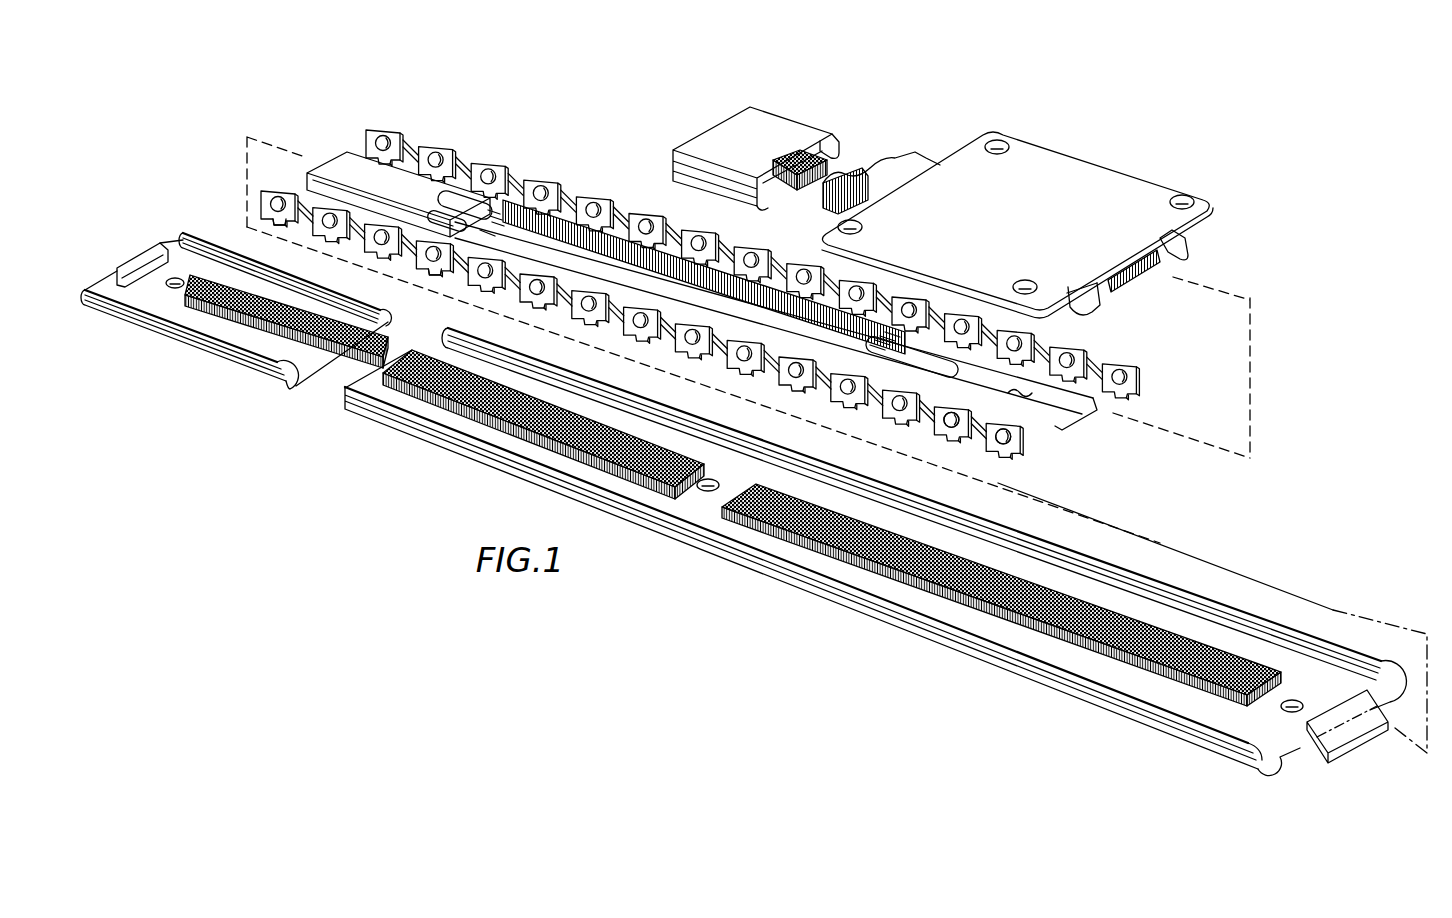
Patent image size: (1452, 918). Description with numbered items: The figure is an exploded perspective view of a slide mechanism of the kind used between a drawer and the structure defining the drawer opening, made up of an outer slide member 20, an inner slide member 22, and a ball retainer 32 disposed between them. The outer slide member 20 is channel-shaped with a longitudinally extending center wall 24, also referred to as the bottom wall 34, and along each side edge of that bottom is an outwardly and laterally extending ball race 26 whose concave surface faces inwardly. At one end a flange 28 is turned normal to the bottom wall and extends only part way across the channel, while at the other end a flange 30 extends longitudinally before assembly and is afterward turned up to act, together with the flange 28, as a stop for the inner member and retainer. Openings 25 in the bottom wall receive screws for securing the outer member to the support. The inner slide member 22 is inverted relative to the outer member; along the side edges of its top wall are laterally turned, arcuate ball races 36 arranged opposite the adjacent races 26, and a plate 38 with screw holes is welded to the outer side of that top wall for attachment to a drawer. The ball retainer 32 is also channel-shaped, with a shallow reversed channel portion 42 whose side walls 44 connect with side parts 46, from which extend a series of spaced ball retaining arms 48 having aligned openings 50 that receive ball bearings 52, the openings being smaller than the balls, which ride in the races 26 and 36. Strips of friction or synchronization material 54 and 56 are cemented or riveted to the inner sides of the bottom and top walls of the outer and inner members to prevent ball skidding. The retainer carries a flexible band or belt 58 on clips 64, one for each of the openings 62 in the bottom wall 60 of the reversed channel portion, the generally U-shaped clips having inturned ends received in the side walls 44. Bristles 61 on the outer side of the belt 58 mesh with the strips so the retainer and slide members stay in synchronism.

The outer slide member 20 is at (297, 398).
The inner slide member 22 is at (836, 140).
The center wall 24 is at (180, 258).
The openings 25 is at (170, 290).
The ball race 26 is at (208, 352).
The flange 28 is at (133, 257).
The flange 30 is at (1320, 770).
The ball retainer 32 is at (510, 188).
The bottom wall 34 is at (720, 137).
The ball races 36 is at (1195, 252).
The plate 38 is at (1065, 167).
The reversed channel portion 42 is at (1047, 393).
The side walls 44 is at (1103, 390).
The side parts 46 is at (357, 212).
The ball retaining arms 48 is at (424, 152).
The openings 50 is at (313, 222).
The ball bearings 52 is at (1000, 437).
The strip of friction or synchronization material 54 is at (820, 543).
The strip of friction or synchronization material 56 is at (802, 150).
The flexible band or belt 58 is at (565, 220).
The bottom wall 60 is at (1017, 381).
The bristles 61 is at (1143, 262).
The openings 62 is at (450, 192).
The clip 64 is at (455, 228).